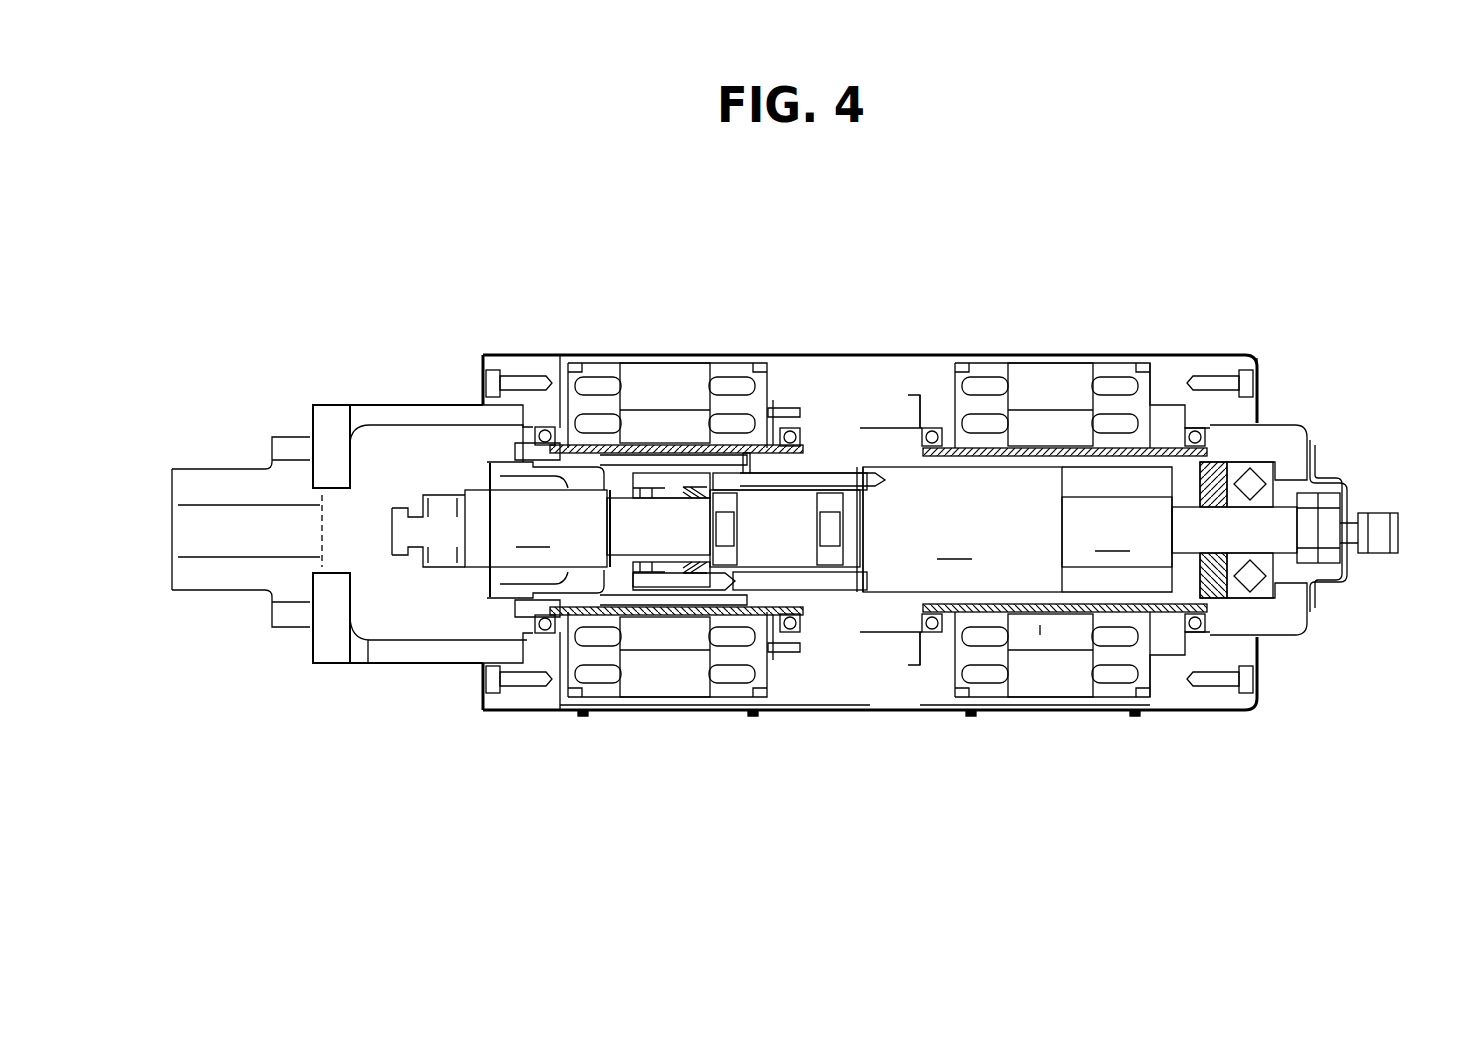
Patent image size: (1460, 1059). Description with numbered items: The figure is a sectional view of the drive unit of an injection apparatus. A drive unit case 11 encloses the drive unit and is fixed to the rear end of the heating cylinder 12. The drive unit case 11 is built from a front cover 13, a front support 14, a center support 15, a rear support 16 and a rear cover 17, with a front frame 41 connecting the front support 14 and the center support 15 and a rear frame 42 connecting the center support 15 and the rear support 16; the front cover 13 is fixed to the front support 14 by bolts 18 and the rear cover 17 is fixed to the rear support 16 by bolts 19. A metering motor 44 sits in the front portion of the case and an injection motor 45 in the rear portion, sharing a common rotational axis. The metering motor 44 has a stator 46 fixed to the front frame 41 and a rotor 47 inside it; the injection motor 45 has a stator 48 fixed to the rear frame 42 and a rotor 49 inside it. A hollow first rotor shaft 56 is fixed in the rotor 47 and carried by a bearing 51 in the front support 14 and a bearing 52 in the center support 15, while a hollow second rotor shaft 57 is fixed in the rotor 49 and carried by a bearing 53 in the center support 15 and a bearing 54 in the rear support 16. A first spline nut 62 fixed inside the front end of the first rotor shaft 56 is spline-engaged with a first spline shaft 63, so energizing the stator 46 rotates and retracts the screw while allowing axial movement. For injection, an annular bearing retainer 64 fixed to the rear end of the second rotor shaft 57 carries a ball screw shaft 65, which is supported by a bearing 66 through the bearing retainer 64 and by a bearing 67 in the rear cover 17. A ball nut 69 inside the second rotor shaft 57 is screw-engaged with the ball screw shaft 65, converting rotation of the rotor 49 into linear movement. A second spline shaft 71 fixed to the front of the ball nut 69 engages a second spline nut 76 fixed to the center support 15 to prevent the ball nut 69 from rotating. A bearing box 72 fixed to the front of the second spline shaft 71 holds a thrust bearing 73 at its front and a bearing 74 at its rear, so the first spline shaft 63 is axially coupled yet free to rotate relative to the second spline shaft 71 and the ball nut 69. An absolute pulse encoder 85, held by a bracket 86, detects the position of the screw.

The drive unit case 11 is at (860, 350).
The heating cylinder 12 is at (197, 466).
The front cover 13 is at (340, 666).
The front support 14 is at (540, 712).
The center support 15 is at (912, 712).
The rear support 16 is at (1168, 712).
The rear cover 17 is at (1232, 712).
The bolts 18 is at (480, 668).
The bolts 19 is at (1258, 688).
The front frame 41 is at (632, 617).
The rear frame 42 is at (1072, 712).
The metering motor 44 is at (604, 378).
The injection motor 45 is at (1112, 372).
The stator 46 is at (650, 385).
The rotor 47 is at (674, 425).
The stator 48 is at (1022, 385).
The rotor 49 is at (1046, 420).
The bearing 51 is at (530, 430).
The bearing 52 is at (802, 425).
The bearing 53 is at (930, 425).
The bearing 54 is at (1196, 425).
The first rotor shaft 56 is at (657, 628).
The second rotor shaft 57 is at (1040, 625).
The first spline nut 62 is at (530, 470).
The first spline shaft 63 is at (501, 530).
The bearing retainer 64 is at (1212, 470).
The ball screw shaft 65 is at (1117, 529).
The bearing 66 is at (1262, 478).
The bearing 67 is at (1338, 490).
The ball nut 69 is at (962, 529).
The second spline shaft 71 is at (760, 590).
The bearing box 72 is at (690, 452).
The thrust bearing 73 is at (627, 572).
The bearing 74 is at (668, 572).
The second spline nut 76 is at (838, 594).
The absolute pulse encoder 85 is at (1398, 515).
The bracket 86 is at (1335, 578).